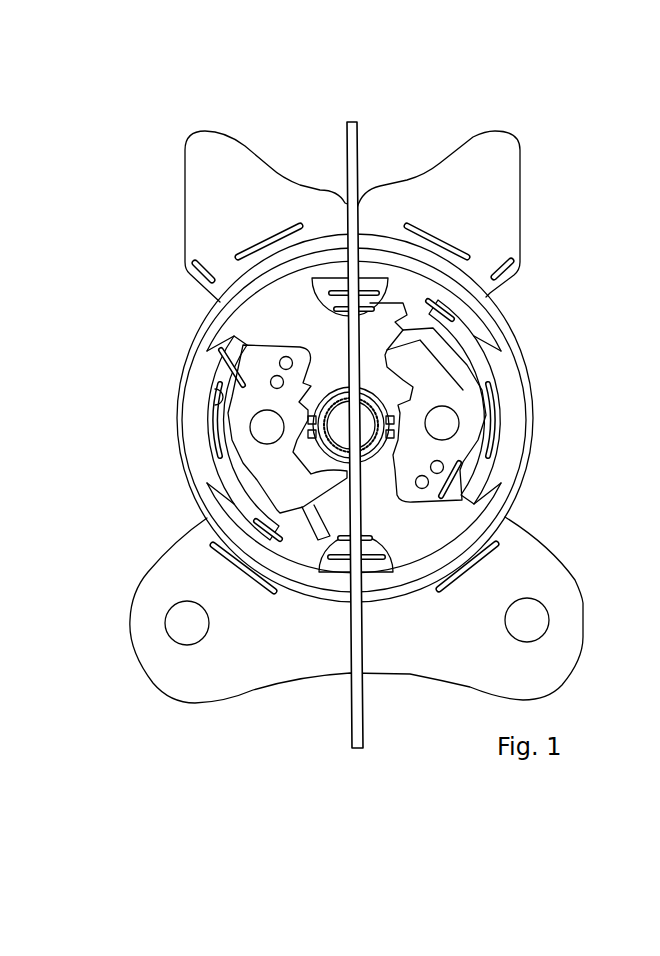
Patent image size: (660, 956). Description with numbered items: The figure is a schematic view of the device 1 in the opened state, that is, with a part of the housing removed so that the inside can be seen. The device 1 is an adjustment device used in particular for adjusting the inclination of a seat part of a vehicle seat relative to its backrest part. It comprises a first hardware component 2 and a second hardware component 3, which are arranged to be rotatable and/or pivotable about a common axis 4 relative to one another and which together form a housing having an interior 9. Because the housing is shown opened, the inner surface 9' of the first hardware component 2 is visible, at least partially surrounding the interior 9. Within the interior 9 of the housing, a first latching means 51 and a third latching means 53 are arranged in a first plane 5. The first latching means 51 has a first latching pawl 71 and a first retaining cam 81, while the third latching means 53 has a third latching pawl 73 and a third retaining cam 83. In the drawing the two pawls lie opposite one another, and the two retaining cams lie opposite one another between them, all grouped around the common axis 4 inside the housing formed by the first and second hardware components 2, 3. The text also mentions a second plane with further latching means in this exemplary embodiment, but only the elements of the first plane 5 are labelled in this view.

The device 1 is at (562, 278).
The first hardware component 2 is at (490, 183).
The second hardware component 3 is at (542, 575).
The common axis 4 is at (367, 427).
The first plane 5 is at (527, 352).
The first latching means 51 is at (538, 443).
The third latching means 53 is at (175, 358).
The first latching pawl 71 is at (415, 537).
The third latching pawl 73 is at (268, 322).
The first retaining cam 81 is at (460, 405).
The third retaining cam 83 is at (230, 430).
The interior 9 is at (300, 420).
The inner surface 9' is at (165, 386).